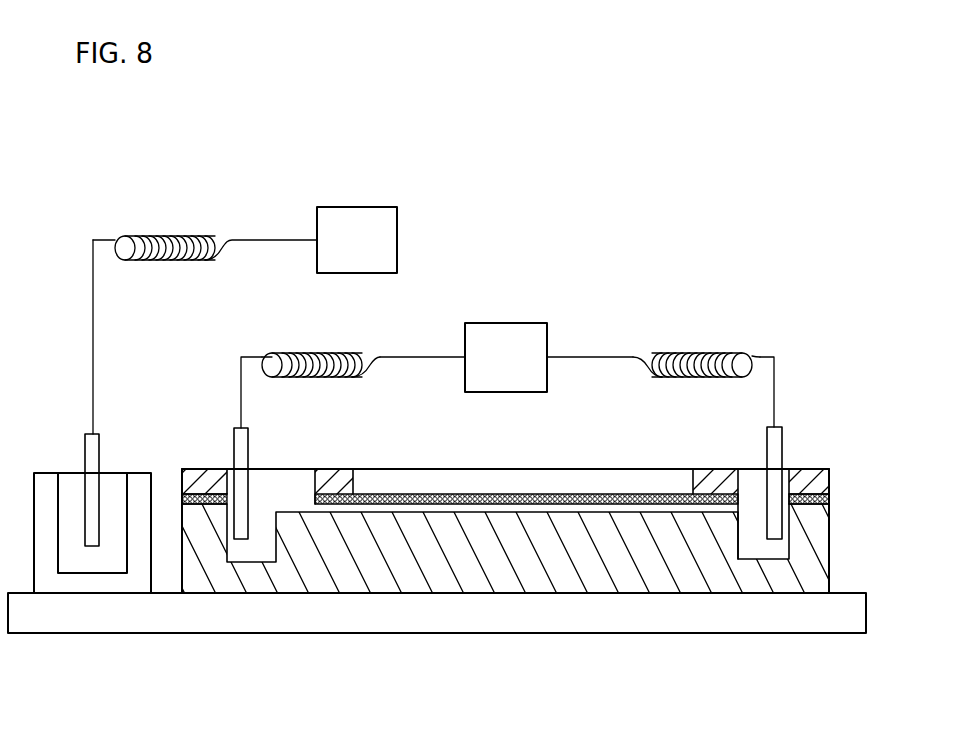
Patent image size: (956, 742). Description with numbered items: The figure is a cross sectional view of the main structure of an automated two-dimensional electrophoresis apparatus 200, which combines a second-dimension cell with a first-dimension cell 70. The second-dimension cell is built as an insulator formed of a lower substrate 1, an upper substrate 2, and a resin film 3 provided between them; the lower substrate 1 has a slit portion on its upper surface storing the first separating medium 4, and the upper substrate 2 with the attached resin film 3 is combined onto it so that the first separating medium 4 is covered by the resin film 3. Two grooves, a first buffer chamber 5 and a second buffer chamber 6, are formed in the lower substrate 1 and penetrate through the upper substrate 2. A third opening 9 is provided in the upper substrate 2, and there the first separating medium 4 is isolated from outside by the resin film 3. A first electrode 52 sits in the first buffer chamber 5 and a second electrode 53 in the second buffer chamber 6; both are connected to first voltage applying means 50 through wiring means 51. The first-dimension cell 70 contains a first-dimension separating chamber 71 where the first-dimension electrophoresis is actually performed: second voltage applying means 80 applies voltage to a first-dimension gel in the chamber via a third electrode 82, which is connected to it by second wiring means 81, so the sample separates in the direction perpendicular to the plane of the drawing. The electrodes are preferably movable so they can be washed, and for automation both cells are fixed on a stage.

The lower substrate 1 is at (831, 549).
The upper substrate 2 is at (831, 472).
The resin film 3 is at (831, 496).
The first separating medium 4 is at (460, 506).
The first buffer chamber 5 is at (268, 523).
The second buffer chamber 6 is at (752, 520).
The third opening 9 is at (366, 480).
The first voltage applying means 50 is at (508, 323).
The wiring means 51 is at (425, 357).
The first electrode 52 is at (237, 447).
The second electrode 53 is at (782, 447).
The 1D cell 70 is at (68, 586).
The 1D separating chamber 71 is at (115, 562).
The second voltage applying means 80 is at (355, 207).
The second wiring means 81 is at (270, 240).
The third electrode 82 is at (88, 458).
The measurement system 200 is at (663, 168).